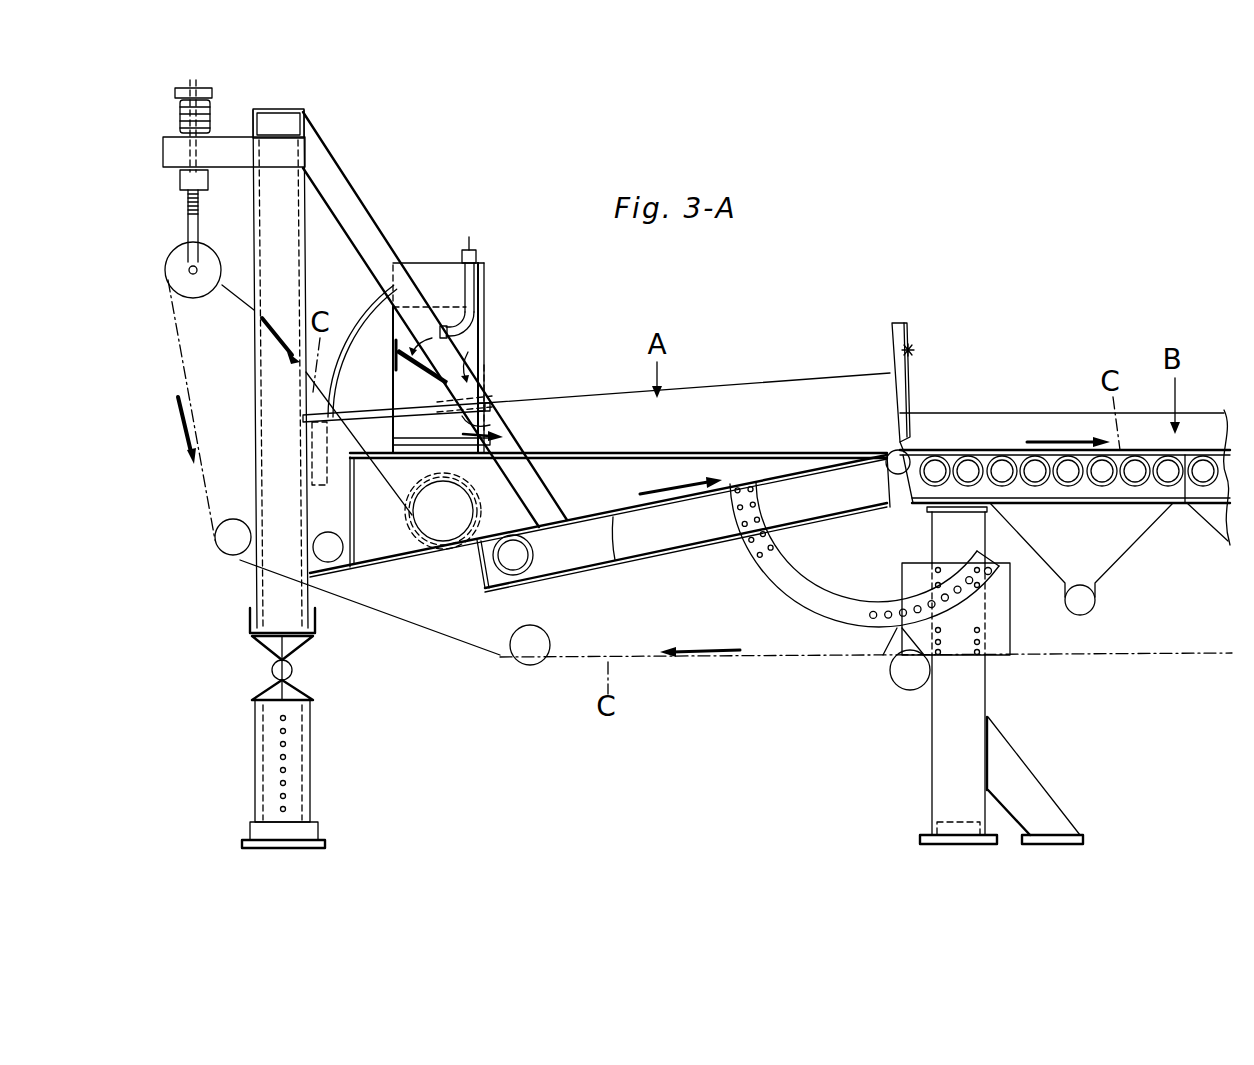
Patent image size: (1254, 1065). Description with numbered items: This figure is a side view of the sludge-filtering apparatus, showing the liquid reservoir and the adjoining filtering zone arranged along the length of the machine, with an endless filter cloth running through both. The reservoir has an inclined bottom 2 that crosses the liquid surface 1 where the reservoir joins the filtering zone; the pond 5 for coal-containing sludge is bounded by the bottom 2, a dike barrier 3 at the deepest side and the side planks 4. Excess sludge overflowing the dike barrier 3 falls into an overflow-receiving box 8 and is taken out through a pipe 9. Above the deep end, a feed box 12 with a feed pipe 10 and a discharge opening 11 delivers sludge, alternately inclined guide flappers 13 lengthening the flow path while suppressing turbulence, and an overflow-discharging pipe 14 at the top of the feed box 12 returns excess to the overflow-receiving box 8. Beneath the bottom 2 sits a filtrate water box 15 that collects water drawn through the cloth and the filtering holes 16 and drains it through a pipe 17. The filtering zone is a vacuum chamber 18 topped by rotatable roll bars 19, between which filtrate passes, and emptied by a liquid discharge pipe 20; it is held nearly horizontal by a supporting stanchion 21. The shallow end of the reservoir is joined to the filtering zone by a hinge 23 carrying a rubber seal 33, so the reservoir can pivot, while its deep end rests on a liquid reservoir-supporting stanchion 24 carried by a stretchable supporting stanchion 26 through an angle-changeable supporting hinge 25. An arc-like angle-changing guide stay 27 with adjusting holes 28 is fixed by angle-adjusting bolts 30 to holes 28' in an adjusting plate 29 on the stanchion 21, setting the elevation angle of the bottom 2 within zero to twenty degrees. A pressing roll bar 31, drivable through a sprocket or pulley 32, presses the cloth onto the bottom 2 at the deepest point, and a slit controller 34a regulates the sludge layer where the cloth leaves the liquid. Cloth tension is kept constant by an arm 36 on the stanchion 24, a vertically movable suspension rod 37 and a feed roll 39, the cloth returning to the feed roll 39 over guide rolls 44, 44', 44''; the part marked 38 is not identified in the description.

The liquid surface 1 is at (683, 455).
The bottom 2 is at (617, 561).
The dike barrier 3 is at (355, 509).
The side planks 4 is at (733, 400).
The pond 5 is at (583, 467).
The overflow-receiving box 8 is at (313, 503).
The pipe 9 is at (334, 557).
The feed pipe 10 is at (484, 283).
The discharge opening 11 is at (497, 409).
The feed box 12 is at (487, 326).
The guide flappers 13 is at (393, 378).
The overflow-discharging pipe 14 is at (369, 306).
The filtrate water box 15 is at (692, 538).
The filtering holes 16 is at (789, 476).
The pipe 17 is at (519, 566).
The vacuum chamber 18 is at (1066, 494).
The roll bars 19 is at (998, 461).
The liquid discharge pipe 20 is at (1095, 601).
The supporting stanchion 21 is at (940, 748).
The hinge 23 is at (918, 450).
The liquid reservoir-supporting stanchion 24 is at (256, 378).
The angle-changeable supporting hinge 25 is at (293, 670).
The stretchable supporting stanchion 26 is at (311, 744).
The angle-changing guide stay 27 is at (792, 557).
The adjusting holes 28 is at (854, 553).
The holes 28' is at (1026, 585).
The adjusting plate 29 is at (1009, 631).
The angle-adjusting bolts 30 is at (880, 650).
The pressing roll bar 31 is at (452, 530).
The sprocket or pulley 32 is at (427, 549).
The rubber seal 33 is at (904, 447).
The slit controller 34a is at (906, 332).
The arm 36 is at (229, 168).
The suspension rod 37 is at (187, 206).
The spring 38 is at (180, 116).
The feed roll 39 is at (171, 268).
The guide roll 44 is at (901, 694).
The guide roll 44' is at (526, 669).
The guide roll 44'' is at (202, 538).